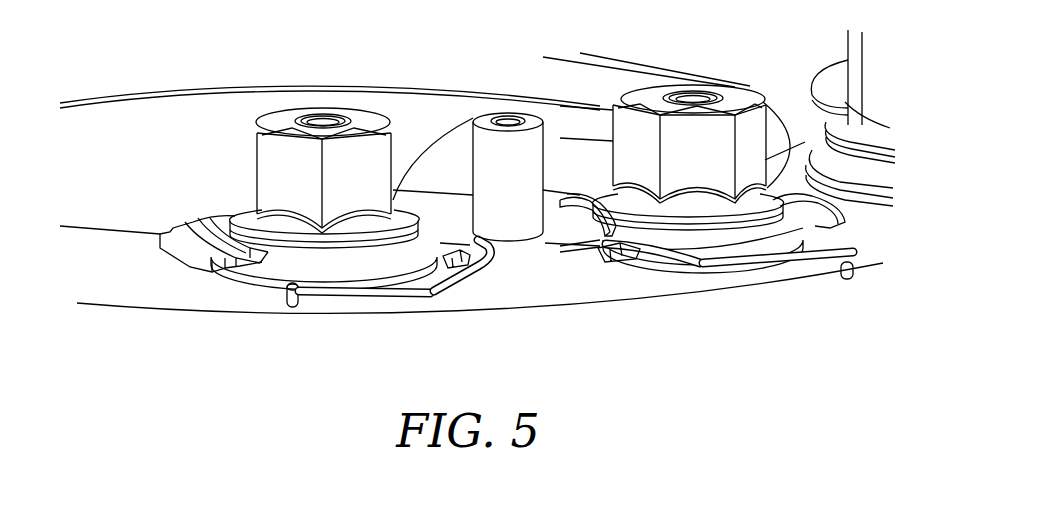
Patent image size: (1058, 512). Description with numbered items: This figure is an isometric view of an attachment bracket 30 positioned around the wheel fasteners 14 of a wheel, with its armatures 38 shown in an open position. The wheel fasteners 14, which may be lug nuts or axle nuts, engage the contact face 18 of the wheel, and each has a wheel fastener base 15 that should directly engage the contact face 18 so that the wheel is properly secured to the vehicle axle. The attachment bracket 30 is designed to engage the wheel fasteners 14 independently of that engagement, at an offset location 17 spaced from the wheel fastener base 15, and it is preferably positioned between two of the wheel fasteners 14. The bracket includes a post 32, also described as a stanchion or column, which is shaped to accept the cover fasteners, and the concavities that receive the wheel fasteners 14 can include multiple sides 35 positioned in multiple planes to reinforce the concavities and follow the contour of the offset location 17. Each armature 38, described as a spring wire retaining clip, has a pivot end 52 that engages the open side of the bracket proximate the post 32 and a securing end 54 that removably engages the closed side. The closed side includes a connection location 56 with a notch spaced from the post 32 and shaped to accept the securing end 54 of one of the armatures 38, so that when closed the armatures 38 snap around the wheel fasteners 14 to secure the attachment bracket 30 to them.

The wheel fastener 14 is at (770, 45).
The wheel fastener base 15 is at (603, 327).
The offset location 17 is at (665, 37).
The contact face 18 is at (117, 342).
The attachment bracket 30 is at (520, 27).
The post 32 is at (523, 187).
The multiple sides 35 is at (583, 212).
The biasing armature 38 is at (800, 270).
The pivot end 52 is at (547, 335).
The securing end 54 is at (848, 280).
The connection location 56 is at (167, 233).